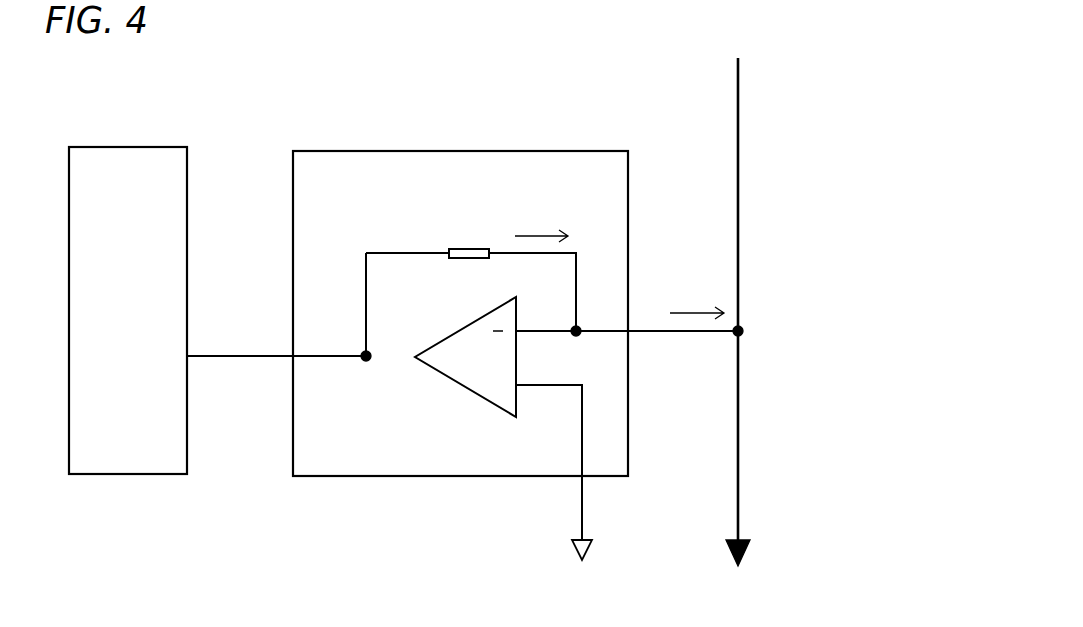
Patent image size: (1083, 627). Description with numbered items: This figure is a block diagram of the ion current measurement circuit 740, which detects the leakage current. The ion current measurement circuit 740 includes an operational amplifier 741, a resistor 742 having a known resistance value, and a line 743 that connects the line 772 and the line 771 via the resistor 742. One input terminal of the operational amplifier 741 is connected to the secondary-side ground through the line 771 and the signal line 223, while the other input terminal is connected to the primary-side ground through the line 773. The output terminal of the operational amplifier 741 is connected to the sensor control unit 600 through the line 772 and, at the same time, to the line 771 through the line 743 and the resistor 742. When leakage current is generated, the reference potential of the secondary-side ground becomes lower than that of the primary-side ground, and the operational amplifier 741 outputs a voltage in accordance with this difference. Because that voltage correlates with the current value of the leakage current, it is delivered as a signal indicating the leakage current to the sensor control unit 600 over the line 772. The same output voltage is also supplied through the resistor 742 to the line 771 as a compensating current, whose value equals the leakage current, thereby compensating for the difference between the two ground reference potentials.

The sensor control unit 600 is at (140, 146).
The ion current measurement circuit 740 is at (571, 150).
The operational amplifier 741 is at (490, 314).
The resistor 742 is at (467, 248).
The line 743 is at (411, 252).
The line 771 is at (683, 337).
The line 772 is at (242, 360).
The line 773 is at (581, 509).
The signal line 223 is at (739, 243).